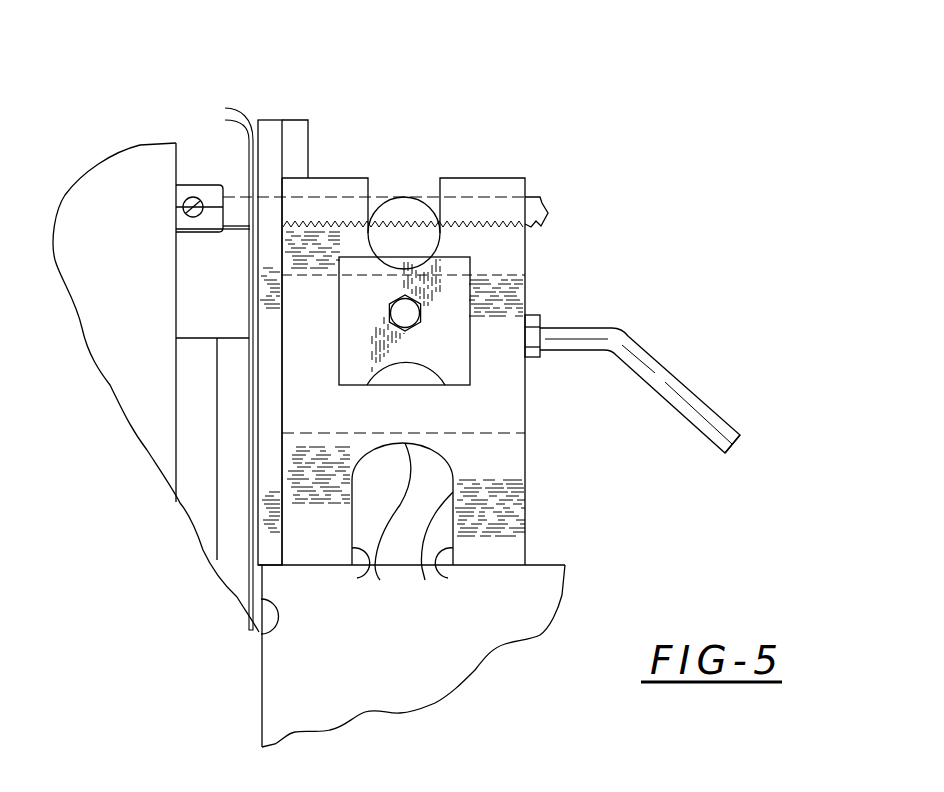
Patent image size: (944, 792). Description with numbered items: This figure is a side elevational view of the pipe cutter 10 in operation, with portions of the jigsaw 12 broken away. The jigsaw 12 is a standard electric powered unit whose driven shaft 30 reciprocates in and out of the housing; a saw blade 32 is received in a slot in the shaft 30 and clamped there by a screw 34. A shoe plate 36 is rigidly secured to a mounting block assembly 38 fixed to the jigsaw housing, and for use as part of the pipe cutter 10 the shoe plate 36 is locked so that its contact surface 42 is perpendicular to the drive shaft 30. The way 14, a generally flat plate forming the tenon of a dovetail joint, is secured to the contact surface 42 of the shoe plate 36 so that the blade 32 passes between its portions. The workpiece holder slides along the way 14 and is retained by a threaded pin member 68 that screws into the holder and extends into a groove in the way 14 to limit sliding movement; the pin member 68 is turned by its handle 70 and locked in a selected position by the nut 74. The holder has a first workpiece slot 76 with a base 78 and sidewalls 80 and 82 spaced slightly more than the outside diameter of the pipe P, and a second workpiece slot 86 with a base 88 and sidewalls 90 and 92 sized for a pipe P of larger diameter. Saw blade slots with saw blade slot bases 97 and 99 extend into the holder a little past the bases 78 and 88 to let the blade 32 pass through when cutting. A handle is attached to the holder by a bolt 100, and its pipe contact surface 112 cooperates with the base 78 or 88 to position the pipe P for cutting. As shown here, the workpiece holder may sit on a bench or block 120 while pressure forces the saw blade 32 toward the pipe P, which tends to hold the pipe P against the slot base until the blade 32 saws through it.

The pipe cutter 10 is at (710, 223).
The jigsaw 12 is at (110, 153).
The way 14 is at (295, 120).
The driven shaft 30 is at (190, 183).
The saw blade 32 is at (542, 198).
The screw 34 is at (205, 200).
The shoe plate 36 is at (252, 535).
The mounting block assembly 38 is at (190, 492).
The contact surface 42 is at (262, 636).
The threaded pin member 68 is at (598, 326).
The handle 70 is at (717, 413).
The nut 74 is at (545, 318).
The first workpiece slot 76 is at (437, 197).
The base 78 is at (445, 230).
The sidewall 80 is at (433, 199).
The sidewall 82 is at (376, 194).
The second workpiece slot 86 is at (425, 545).
The base 88 is at (377, 545).
The sidewall 90 is at (449, 566).
The sidewall 92 is at (352, 570).
The saw blade slot base 97 is at (522, 263).
The saw blade slot base 99 is at (465, 433).
The bolt 100 is at (423, 315).
The pipe contact surface 112 is at (427, 376).
The bench or block 120 is at (265, 700).
The pipe P is at (385, 205).